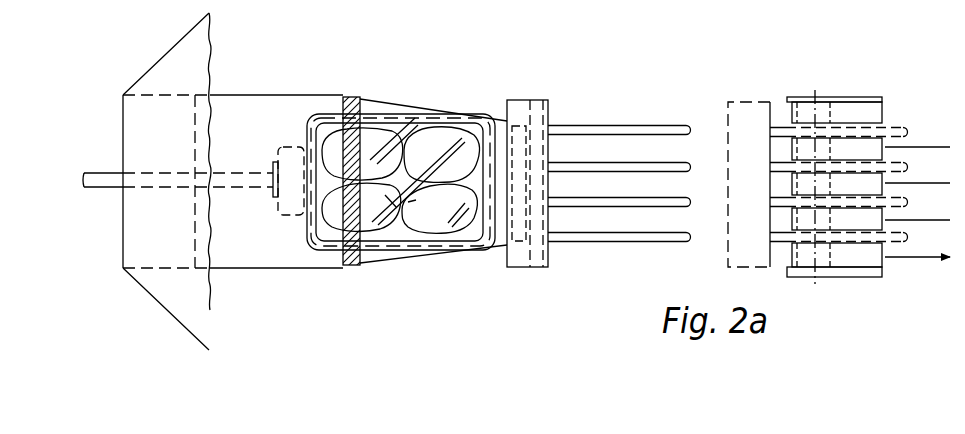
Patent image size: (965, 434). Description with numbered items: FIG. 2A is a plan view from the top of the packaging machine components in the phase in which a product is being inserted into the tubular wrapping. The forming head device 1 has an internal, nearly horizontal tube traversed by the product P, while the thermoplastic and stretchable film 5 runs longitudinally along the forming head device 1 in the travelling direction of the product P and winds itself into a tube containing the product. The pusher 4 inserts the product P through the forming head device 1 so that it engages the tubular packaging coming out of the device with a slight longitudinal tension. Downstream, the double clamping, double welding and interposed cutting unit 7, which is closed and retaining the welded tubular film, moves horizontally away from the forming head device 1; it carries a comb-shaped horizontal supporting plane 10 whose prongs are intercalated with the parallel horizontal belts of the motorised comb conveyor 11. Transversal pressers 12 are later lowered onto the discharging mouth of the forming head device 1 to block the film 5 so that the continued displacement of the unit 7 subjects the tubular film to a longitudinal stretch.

The forming head device 1 is at (253, 90).
The pusher 4 is at (295, 202).
The thermoplastic and stretchable film 5 is at (170, 65).
The double clamping, double welding and interposed cutting unit 7 is at (550, 96).
The horizontal supporting plane 10 is at (615, 128).
The motorised comb conveyor 11 is at (826, 96).
The transversal presser 12 is at (350, 97).
The product P is at (434, 118).